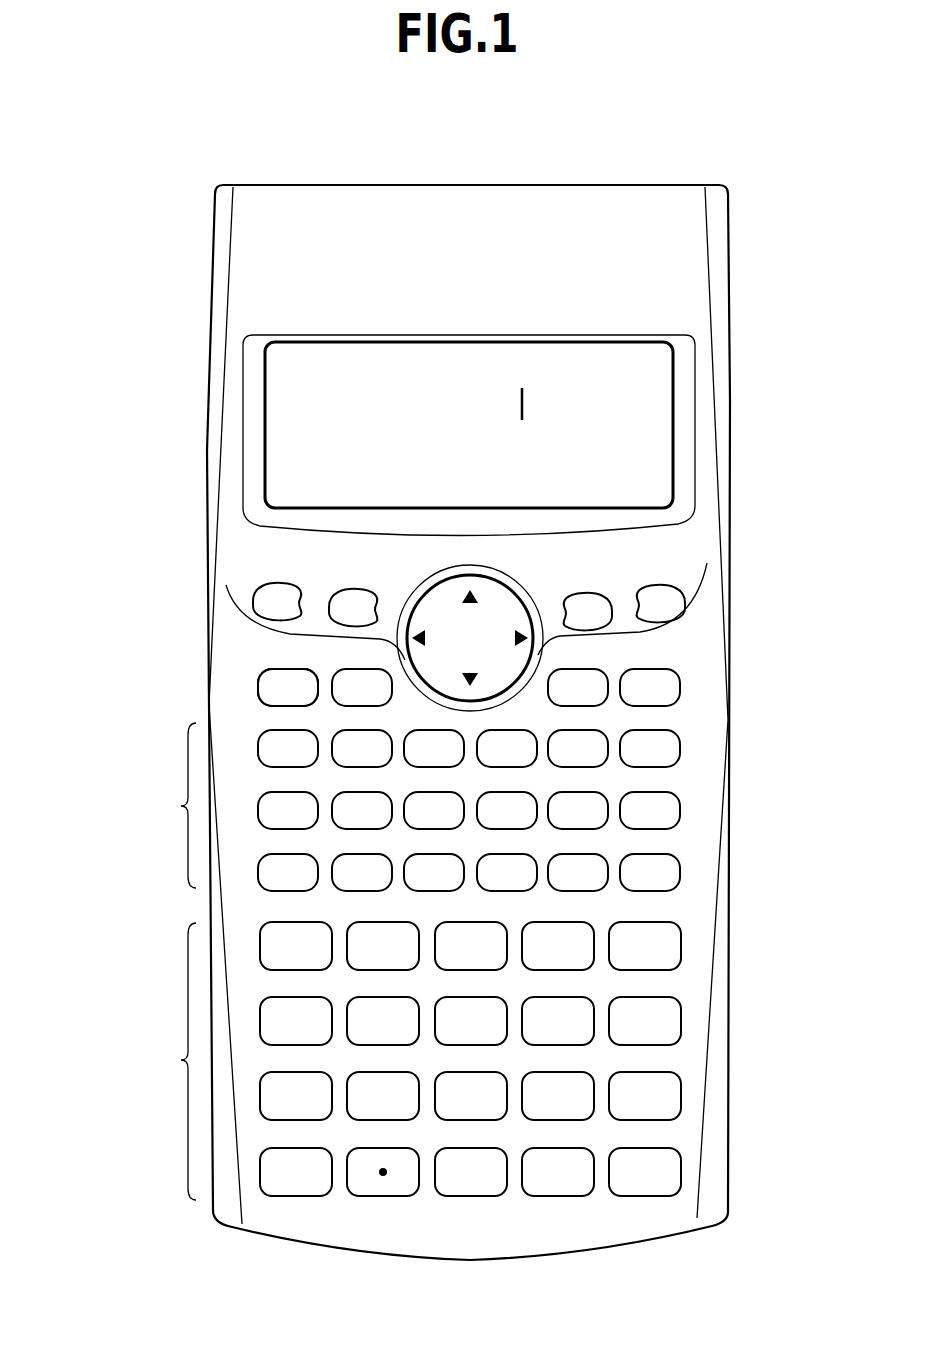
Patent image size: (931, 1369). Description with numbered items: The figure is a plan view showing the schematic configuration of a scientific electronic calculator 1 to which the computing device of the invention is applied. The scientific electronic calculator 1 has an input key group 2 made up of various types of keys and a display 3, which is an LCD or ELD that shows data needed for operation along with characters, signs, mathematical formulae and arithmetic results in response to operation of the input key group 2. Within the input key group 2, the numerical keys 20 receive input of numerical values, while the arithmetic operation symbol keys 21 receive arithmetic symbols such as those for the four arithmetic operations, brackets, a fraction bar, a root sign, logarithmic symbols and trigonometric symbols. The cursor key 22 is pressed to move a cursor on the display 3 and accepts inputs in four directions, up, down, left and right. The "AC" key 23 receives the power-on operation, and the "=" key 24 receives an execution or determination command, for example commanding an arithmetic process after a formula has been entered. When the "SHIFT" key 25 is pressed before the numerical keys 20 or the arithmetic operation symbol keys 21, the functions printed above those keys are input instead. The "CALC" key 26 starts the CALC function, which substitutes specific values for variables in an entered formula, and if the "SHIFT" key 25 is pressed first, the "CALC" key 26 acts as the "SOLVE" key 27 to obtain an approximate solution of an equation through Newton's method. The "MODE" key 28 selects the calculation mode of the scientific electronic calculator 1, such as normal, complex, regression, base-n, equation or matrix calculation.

The scientific electronic calculator 1 is at (143, 170).
The input key group 2 is at (436, 790).
The display 3 is at (263, 420).
The numerical keys 20 is at (466, 1042).
The arithmetic operation symbol keys 21 is at (386, 759).
The cursor key 22 is at (512, 585).
The "AC" key 23 is at (679, 945).
The "=" key 24 is at (680, 1170).
The "SHIFT" key 25 is at (252, 594).
The "CALC" key 26 is at (260, 685).
The "SOLVE" key 27 is at (260, 685).
The "MODE" key 28 is at (607, 590).